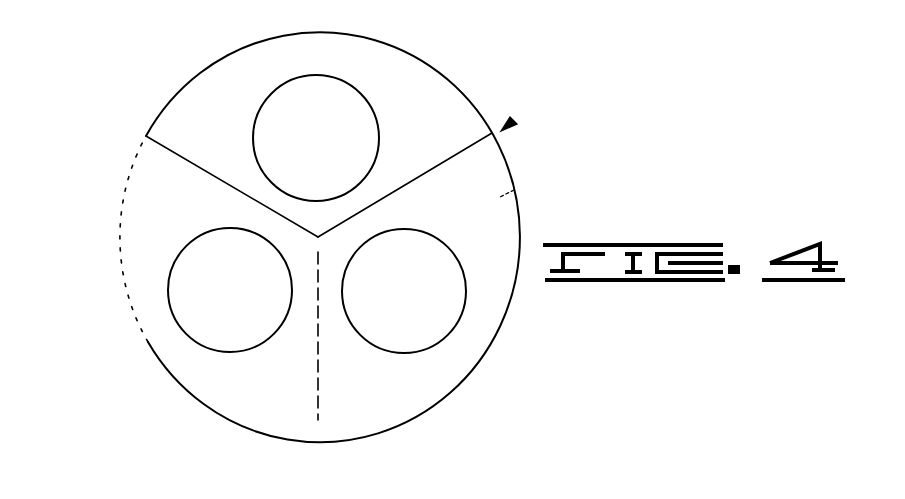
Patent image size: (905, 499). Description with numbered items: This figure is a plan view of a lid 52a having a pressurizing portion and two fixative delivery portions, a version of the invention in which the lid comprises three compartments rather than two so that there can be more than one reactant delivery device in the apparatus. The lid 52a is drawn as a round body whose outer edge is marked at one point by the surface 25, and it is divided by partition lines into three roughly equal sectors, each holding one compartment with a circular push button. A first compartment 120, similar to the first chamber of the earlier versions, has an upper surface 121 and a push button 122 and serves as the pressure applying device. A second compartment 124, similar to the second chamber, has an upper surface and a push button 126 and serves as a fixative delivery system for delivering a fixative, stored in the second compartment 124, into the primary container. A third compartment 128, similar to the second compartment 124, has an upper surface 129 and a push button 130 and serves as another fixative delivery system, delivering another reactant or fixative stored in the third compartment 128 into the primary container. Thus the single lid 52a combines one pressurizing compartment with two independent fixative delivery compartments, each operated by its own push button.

The first compartment 120 is at (197, 73).
The upper surface 121 is at (195, 122).
The push button 122 is at (300, 100).
The second compartment 124 is at (508, 170).
The outer surface 25 is at (514, 190).
The connector body 52a is at (512, 120).
The push button 126 is at (445, 312).
The third compartment 128 is at (117, 238).
The upper surface 129 is at (157, 185).
The push button 130 is at (185, 303).